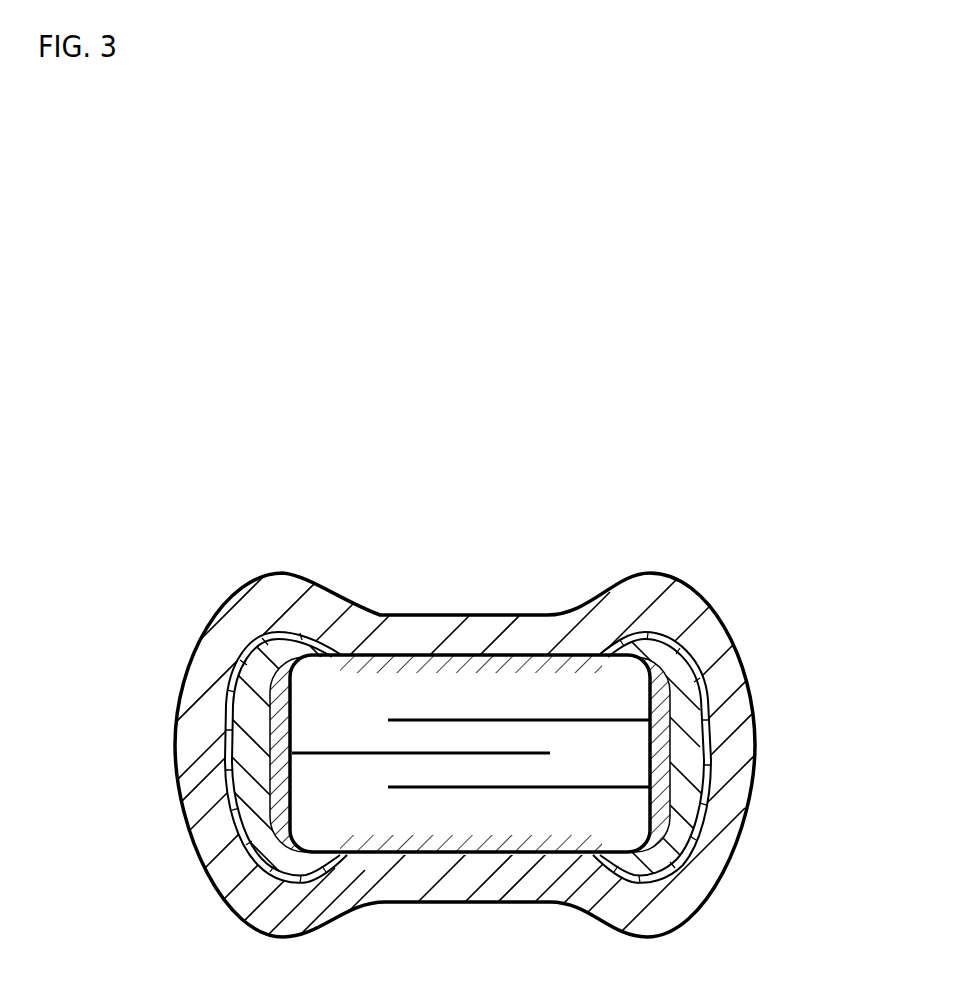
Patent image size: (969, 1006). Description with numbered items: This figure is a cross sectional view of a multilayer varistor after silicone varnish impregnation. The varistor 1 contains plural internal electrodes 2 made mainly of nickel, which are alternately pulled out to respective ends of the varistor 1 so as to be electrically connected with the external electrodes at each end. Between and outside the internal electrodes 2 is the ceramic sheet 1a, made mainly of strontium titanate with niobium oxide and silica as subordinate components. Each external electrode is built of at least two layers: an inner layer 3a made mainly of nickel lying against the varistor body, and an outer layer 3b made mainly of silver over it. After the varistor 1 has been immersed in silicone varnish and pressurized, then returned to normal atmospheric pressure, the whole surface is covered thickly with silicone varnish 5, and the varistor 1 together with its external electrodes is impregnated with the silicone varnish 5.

The varistor 1 is at (400, 830).
The ceramic sheet 1a is at (523, 807).
The internal electrodes 2 is at (488, 720).
The inner layer 3a is at (665, 798).
The outer layer 3b is at (686, 663).
The silicone varnish 5 is at (415, 655).